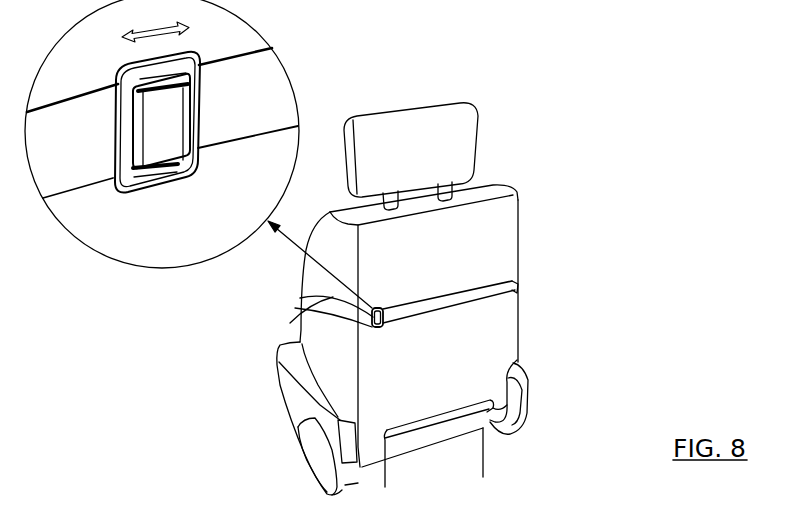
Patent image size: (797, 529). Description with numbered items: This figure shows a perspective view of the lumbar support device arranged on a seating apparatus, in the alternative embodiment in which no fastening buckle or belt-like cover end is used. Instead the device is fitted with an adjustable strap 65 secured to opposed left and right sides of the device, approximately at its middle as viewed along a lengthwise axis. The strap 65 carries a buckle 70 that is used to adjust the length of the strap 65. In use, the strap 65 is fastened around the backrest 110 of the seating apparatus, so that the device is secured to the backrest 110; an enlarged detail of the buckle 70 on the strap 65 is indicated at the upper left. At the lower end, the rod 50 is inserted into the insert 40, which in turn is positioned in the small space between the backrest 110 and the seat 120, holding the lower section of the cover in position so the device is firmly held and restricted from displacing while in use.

The backrest 110 is at (518, 213).
The adjustable strap 65 is at (515, 290).
The buckle 70 is at (298, 328).
The seat 120 is at (483, 427).
The insert 40 is at (483, 477).
The rod 50 is at (400, 487).